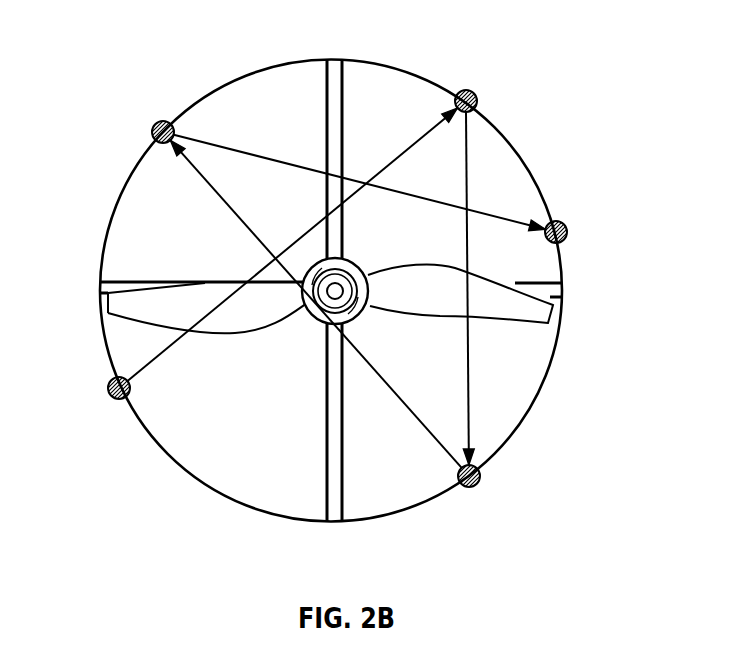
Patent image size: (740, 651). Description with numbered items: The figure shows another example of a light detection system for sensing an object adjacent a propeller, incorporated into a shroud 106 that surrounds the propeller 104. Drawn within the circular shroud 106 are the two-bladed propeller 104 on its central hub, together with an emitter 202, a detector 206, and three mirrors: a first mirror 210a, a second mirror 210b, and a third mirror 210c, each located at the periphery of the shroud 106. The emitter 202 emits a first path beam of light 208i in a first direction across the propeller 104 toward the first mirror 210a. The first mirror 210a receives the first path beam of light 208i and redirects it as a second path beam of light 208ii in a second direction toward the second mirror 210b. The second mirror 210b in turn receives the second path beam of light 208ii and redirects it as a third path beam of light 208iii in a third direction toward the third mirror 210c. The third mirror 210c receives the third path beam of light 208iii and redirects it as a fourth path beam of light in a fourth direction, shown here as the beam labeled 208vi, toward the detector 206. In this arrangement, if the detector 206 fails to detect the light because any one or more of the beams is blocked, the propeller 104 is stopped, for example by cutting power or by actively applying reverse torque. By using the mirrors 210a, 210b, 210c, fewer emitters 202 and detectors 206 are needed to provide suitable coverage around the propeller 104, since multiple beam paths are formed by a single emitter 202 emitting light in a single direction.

The propeller 104 is at (512, 330).
The shroud 106 is at (106, 237).
The emitter 202 is at (112, 396).
The detector 206 is at (566, 226).
The first path beam of light 208i is at (167, 355).
The second path beam of light 208ii is at (470, 165).
The third path beam of light 208iii is at (400, 398).
The distance line 208vi is at (230, 147).
The first mirror 210a is at (476, 94).
The second mirror 210b is at (480, 481).
The third mirror 210c is at (156, 125).